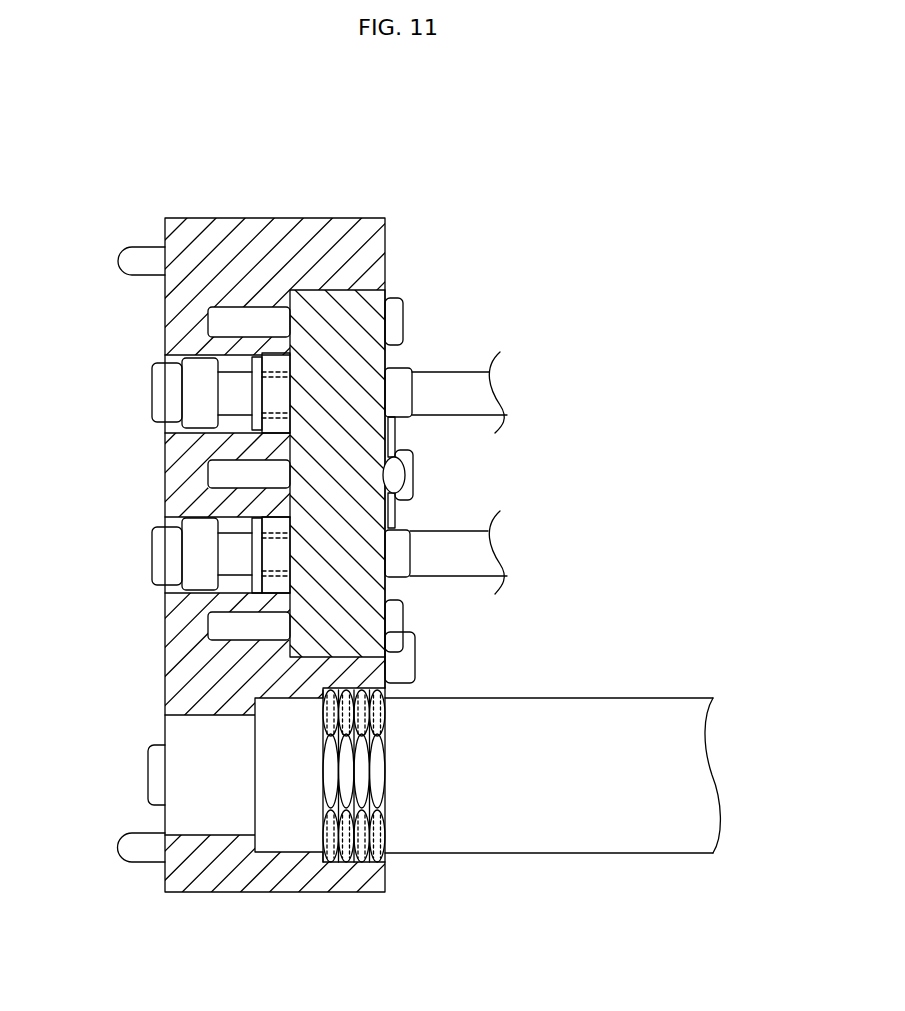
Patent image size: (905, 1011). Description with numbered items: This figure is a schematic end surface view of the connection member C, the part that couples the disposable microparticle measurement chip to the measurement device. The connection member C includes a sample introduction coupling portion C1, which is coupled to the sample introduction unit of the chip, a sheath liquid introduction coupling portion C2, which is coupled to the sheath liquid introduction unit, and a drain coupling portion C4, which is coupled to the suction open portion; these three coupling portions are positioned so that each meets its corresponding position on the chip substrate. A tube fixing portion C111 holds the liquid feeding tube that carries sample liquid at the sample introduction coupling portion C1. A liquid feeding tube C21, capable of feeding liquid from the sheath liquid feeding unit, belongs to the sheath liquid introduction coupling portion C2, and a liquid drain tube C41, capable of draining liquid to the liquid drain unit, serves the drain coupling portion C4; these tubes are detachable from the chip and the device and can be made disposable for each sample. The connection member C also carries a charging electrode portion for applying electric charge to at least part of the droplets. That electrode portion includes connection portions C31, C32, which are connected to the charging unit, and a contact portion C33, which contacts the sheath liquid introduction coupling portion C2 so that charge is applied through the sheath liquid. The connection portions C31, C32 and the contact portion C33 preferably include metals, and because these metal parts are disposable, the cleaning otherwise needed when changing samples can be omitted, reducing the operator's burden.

The connection member C is at (755, 257).
The sample introduction coupling portion C1 is at (385, 912).
The tube fixing portion C111 is at (650, 715).
The sheath liquid introduction coupling portion C2 is at (372, 580).
The liquid feeding tube C21 is at (440, 557).
The connection portion C31 is at (404, 467).
The connection portion C32 is at (305, 355).
The contact portion C33 is at (238, 557).
The drain coupling portion C4 is at (368, 395).
The liquid drain tube C41 is at (452, 387).